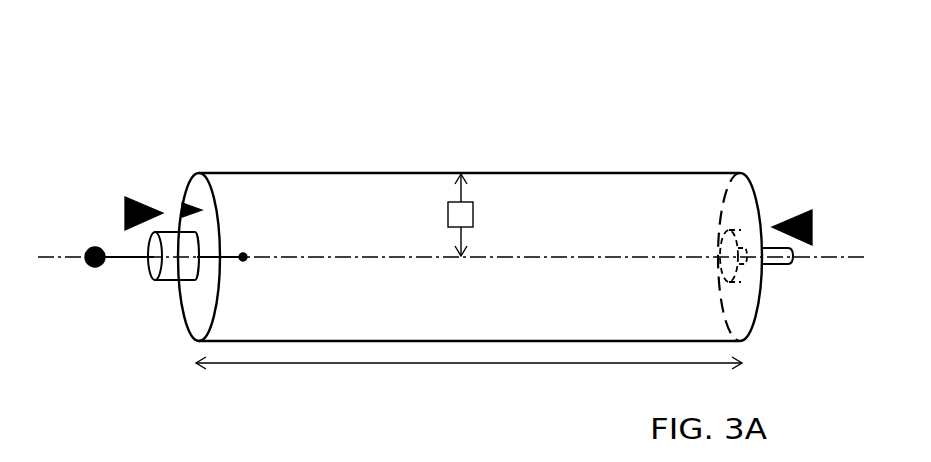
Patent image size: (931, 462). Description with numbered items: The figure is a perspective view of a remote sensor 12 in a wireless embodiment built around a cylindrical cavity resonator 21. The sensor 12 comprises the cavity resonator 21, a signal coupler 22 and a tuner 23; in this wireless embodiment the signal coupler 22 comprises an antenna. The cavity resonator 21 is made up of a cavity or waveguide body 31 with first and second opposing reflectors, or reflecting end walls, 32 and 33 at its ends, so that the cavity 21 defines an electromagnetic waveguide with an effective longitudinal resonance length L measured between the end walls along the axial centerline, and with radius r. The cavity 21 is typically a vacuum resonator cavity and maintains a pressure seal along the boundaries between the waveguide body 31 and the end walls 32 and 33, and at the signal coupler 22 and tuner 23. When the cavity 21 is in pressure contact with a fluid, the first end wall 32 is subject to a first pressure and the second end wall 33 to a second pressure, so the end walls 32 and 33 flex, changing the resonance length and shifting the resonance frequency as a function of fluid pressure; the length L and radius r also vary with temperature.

The remote sensor 12 is at (186, 66).
The cavity resonator 21 is at (382, 146).
The waveguide body 31 is at (562, 172).
The first reflector 32 is at (180, 226).
The second reflector 33 is at (781, 208).
The signal coupler 22 is at (171, 272).
The tuner 23 is at (776, 266).